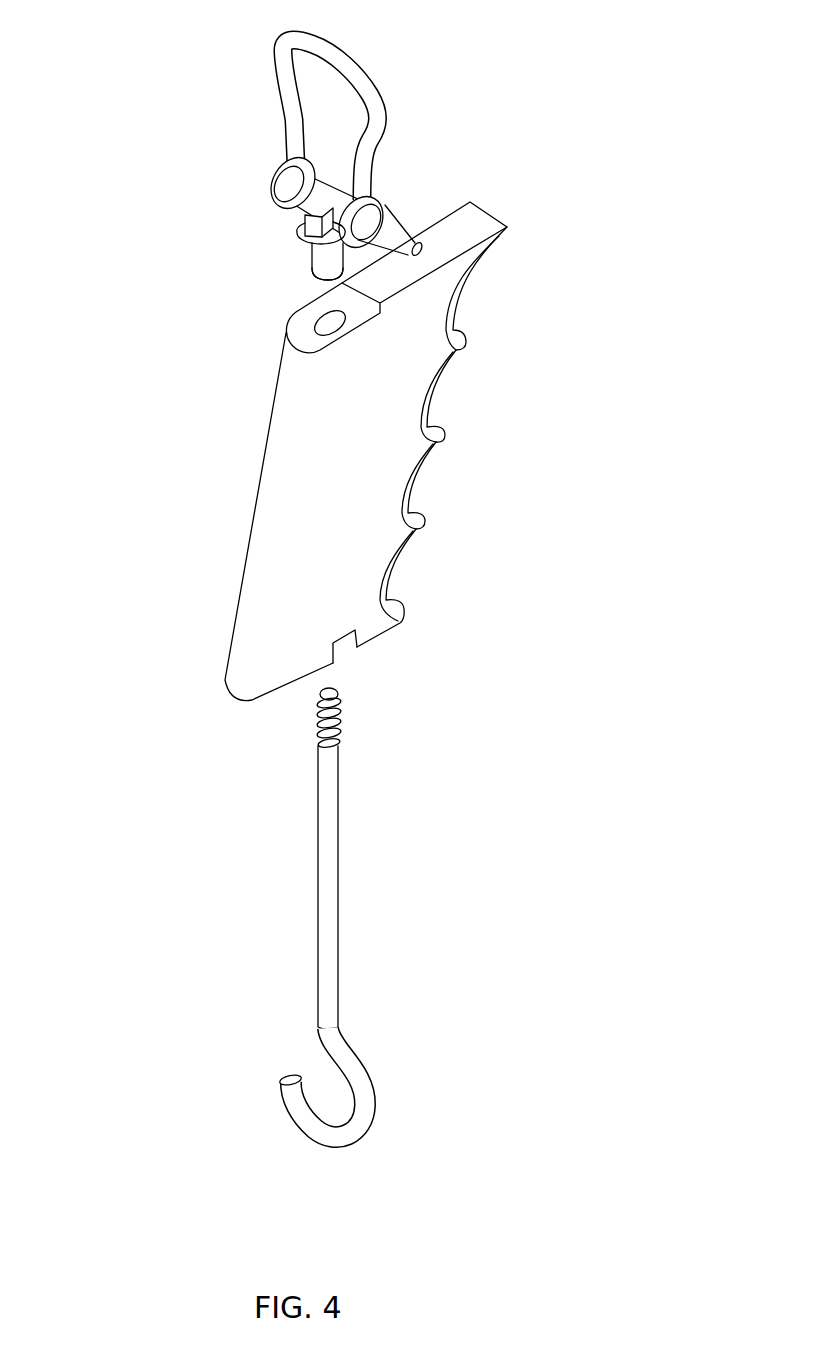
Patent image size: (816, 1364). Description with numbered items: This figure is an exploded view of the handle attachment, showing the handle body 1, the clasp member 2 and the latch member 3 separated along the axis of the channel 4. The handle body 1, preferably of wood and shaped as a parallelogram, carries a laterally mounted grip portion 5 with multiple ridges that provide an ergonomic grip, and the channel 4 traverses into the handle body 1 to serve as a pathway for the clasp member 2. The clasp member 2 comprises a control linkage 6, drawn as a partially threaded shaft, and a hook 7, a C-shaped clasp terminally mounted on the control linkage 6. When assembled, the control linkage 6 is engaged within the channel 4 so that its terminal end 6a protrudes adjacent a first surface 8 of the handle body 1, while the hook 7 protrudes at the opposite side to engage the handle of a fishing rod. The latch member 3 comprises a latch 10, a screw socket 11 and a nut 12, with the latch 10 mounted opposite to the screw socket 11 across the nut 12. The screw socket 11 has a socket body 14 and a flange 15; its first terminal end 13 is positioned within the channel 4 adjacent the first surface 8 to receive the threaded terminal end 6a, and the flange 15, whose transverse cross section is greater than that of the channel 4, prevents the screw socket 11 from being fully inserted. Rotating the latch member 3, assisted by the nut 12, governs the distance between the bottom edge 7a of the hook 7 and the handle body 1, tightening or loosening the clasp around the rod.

The handle body 1 is at (258, 562).
The clasp member 2 is at (371, 960).
The latch member 3 is at (155, 113).
The channel 4 is at (322, 324).
The grip portion 5 is at (485, 413).
The control linkage 6 is at (328, 970).
The terminal end 6a is at (310, 697).
The hook 7 is at (363, 1088).
The bottom edge 7a is at (349, 1134).
The first surface 8 is at (458, 221).
The latch 10 is at (300, 43).
The screw socket 11 is at (262, 229).
The nut 12 is at (312, 227).
The first terminal end 13 is at (313, 282).
The socket body 14 is at (320, 260).
The flange 15 is at (313, 235).